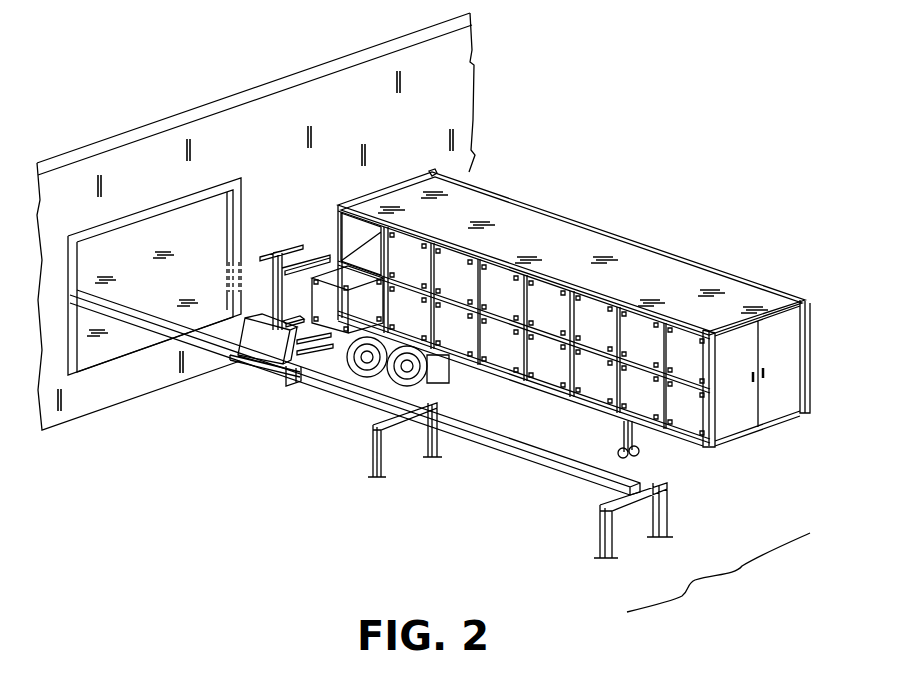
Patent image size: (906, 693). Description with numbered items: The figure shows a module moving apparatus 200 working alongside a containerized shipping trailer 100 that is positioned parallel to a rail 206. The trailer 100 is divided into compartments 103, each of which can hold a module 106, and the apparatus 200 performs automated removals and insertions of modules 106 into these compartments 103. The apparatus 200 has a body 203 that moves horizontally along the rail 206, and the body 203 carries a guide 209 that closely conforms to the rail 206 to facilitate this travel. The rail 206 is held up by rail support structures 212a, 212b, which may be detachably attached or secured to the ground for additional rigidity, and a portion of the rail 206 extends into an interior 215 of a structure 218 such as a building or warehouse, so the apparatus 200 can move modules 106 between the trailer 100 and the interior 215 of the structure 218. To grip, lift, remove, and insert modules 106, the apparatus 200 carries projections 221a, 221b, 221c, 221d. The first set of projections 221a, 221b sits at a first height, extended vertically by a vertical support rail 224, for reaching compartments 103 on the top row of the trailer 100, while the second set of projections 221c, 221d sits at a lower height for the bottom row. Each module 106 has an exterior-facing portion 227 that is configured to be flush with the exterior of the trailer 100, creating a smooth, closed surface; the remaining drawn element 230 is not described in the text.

The containerized shipping trailer 100 is at (574, 306).
The compartment 103 is at (347, 246).
The module 106 is at (319, 314).
The module moving apparatus 200 is at (250, 349).
The body 203 is at (243, 358).
The rail 206 is at (333, 394).
The guide 209 is at (297, 380).
The rail support structure 212a is at (368, 458).
The rail support structure 212b is at (598, 533).
The interior 215 is at (106, 260).
The structure 218 is at (240, 149).
The projection 221a is at (272, 254).
The projection 221b is at (312, 257).
The projection 221c is at (297, 321).
The projection 221d is at (335, 341).
The vertical support rail 224 is at (268, 271).
The exterior-facing portion 227 is at (541, 375).
The floor rail 230 is at (560, 390).